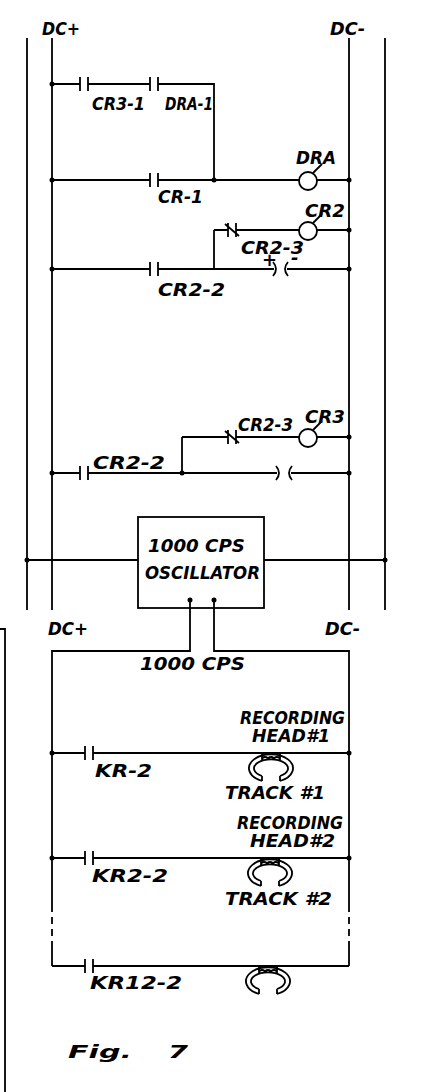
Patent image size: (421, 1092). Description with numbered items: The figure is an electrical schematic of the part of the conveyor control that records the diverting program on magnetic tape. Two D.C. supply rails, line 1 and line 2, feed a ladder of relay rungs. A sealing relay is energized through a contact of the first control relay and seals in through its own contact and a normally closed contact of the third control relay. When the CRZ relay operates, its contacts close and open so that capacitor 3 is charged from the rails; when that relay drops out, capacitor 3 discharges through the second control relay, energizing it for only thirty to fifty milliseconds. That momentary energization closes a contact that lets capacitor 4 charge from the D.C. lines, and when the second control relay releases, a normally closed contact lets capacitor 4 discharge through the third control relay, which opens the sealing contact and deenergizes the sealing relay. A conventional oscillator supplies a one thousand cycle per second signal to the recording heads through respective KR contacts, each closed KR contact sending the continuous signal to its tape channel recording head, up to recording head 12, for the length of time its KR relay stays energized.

The line 1 is at (14, 555).
The line 2 is at (387, 328).
The capacitor 3 is at (298, 281).
The capacitor 4 is at (300, 483).
The tape channel recording head 12 is at (290, 969).